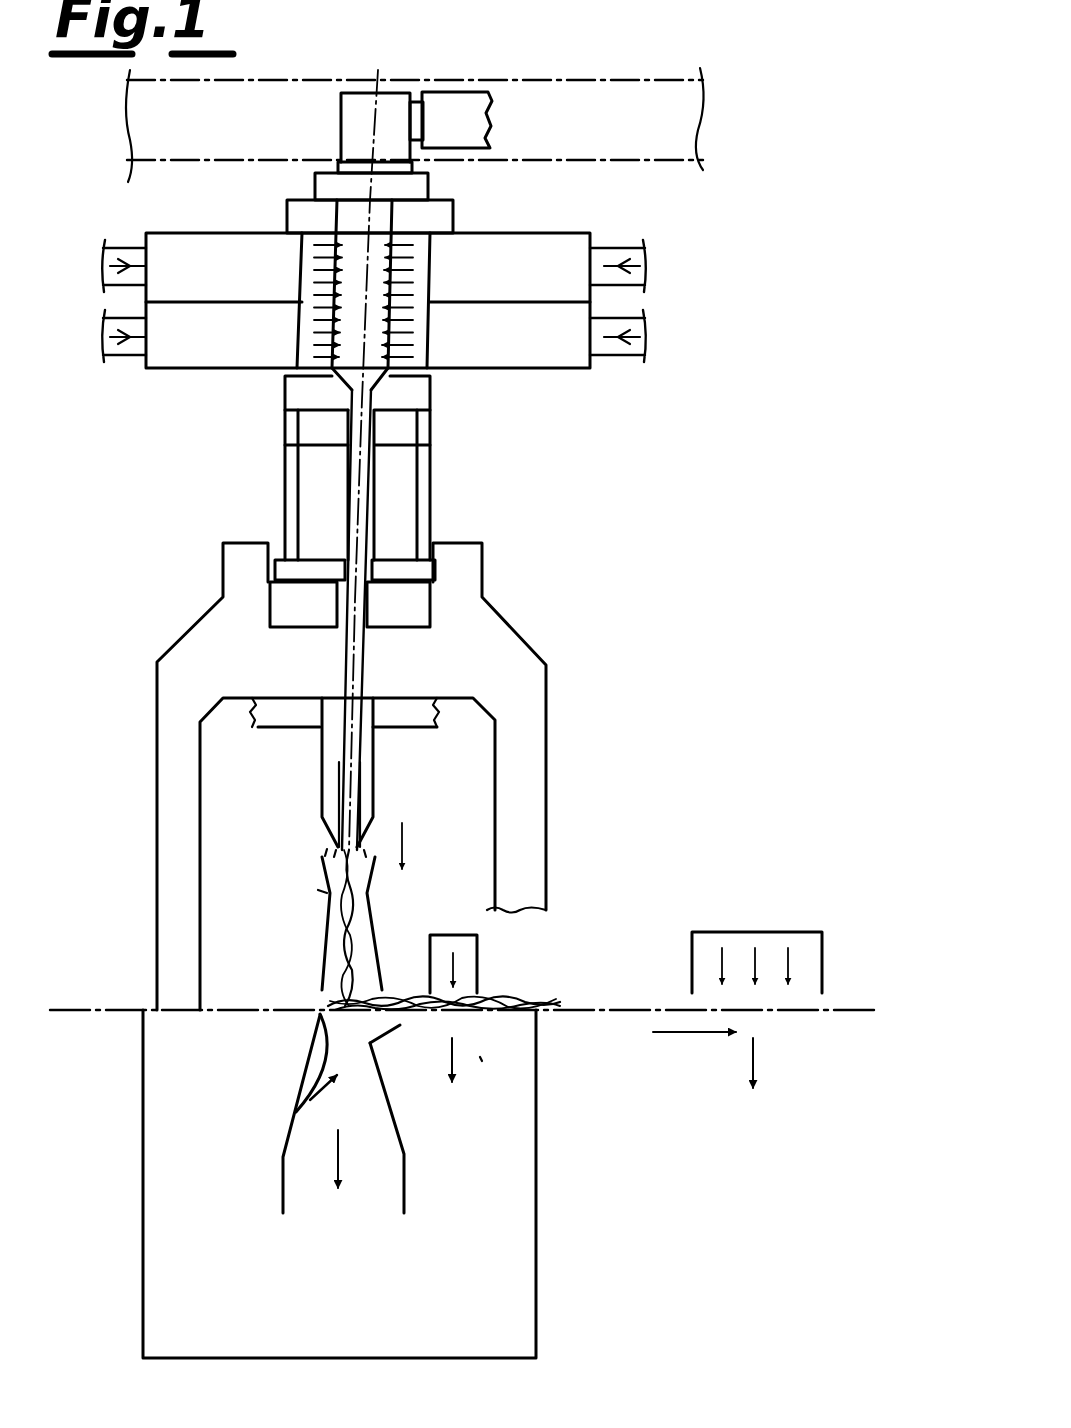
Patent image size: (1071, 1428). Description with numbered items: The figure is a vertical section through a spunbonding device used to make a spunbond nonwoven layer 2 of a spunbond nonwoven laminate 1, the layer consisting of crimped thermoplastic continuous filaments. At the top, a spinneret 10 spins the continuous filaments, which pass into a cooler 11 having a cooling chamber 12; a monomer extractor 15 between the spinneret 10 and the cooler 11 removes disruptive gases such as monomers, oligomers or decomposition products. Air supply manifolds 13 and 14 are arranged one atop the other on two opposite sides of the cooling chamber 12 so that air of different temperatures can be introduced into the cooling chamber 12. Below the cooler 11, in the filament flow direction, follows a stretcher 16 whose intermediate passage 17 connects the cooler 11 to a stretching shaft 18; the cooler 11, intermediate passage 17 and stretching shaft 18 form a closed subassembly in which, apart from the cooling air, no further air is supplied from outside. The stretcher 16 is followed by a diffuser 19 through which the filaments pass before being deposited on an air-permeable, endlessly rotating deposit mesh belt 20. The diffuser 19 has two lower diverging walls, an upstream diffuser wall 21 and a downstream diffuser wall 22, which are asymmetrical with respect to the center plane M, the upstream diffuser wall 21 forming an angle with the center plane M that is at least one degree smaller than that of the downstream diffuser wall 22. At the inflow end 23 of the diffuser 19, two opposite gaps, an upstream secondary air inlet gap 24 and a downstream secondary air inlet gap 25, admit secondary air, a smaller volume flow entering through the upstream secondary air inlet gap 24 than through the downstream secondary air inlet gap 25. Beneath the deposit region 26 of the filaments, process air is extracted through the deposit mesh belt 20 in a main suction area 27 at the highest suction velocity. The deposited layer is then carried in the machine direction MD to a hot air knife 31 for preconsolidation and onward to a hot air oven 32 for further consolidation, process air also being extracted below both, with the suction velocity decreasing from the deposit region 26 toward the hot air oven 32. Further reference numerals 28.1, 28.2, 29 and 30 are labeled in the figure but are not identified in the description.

The spunbond nonwoven laminate 1 is at (551, 992).
The spunbond nonwoven layer 2 is at (519, 993).
The spinneret 10 is at (336, 117).
The cooler 11 is at (266, 219).
The cooling chamber 12 is at (363, 290).
The air supply manifold 13 is at (374, 267).
The air supply manifold 14 is at (374, 335).
The monomer extractor 15 is at (444, 226).
The stretcher 16 is at (394, 663).
The intermediate passage 17 is at (360, 484).
The stretching shaft 18 is at (362, 767).
The diffuser 19 is at (314, 877).
The deposit mesh belt 20 is at (570, 1012).
The upstream diffuser wall 21 is at (325, 943).
The downstream diffuser wall 22 is at (373, 937).
The inflow end 23 is at (311, 849).
The upstream secondary air inlet gap 24 is at (337, 850).
The downstream secondary air inlet gap 25 is at (368, 845).
The deposit region 26 is at (335, 1019).
The main suction area 27 is at (310, 1100).
The suction channel wall 28.1 is at (295, 1123).
The suction channel wall 28.2 is at (405, 1131).
The suction air 29 is at (484, 1063).
The suction box 30 is at (389, 1040).
The hot air knife 31 is at (484, 944).
The hot air oven 32 is at (728, 928).
The center plane M is at (343, 764).